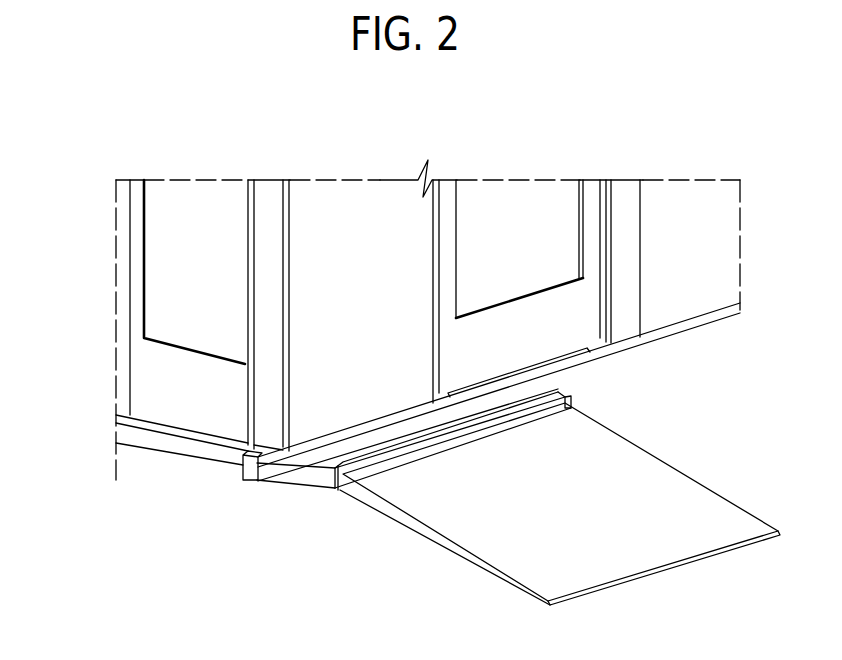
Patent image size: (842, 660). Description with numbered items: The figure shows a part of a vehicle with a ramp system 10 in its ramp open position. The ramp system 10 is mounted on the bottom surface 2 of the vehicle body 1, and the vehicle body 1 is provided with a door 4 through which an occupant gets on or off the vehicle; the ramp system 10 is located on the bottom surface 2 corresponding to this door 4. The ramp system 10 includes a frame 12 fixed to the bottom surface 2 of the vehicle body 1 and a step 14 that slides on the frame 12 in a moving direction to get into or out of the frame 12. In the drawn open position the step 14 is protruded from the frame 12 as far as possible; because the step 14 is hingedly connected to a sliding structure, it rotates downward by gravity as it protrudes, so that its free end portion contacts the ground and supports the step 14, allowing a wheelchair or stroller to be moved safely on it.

The vehicle body 1 is at (104, 288).
The bottom surface 2 is at (673, 342).
The door 4 is at (562, 332).
The ramp system 10 is at (326, 510).
The frame 12 is at (313, 478).
The step 14 is at (627, 555).